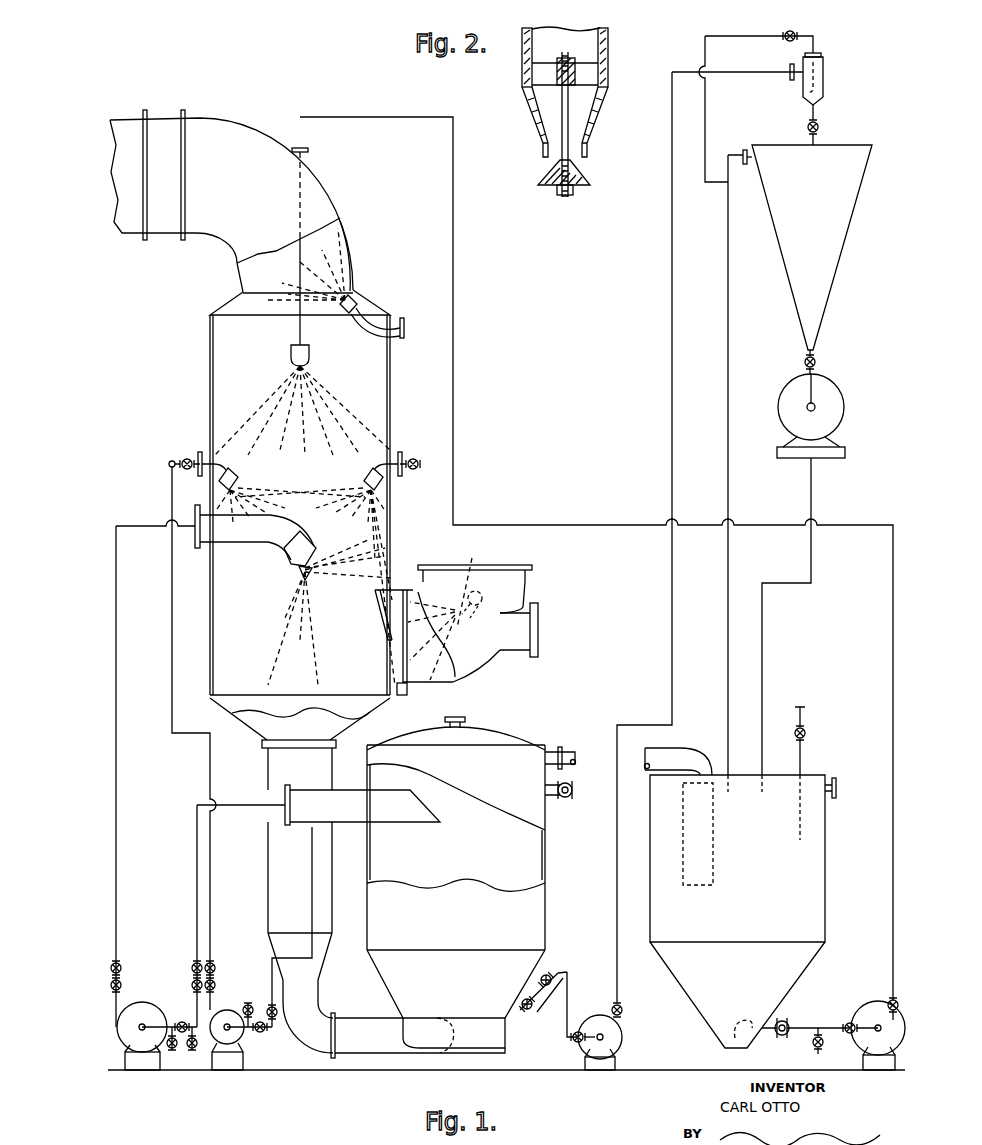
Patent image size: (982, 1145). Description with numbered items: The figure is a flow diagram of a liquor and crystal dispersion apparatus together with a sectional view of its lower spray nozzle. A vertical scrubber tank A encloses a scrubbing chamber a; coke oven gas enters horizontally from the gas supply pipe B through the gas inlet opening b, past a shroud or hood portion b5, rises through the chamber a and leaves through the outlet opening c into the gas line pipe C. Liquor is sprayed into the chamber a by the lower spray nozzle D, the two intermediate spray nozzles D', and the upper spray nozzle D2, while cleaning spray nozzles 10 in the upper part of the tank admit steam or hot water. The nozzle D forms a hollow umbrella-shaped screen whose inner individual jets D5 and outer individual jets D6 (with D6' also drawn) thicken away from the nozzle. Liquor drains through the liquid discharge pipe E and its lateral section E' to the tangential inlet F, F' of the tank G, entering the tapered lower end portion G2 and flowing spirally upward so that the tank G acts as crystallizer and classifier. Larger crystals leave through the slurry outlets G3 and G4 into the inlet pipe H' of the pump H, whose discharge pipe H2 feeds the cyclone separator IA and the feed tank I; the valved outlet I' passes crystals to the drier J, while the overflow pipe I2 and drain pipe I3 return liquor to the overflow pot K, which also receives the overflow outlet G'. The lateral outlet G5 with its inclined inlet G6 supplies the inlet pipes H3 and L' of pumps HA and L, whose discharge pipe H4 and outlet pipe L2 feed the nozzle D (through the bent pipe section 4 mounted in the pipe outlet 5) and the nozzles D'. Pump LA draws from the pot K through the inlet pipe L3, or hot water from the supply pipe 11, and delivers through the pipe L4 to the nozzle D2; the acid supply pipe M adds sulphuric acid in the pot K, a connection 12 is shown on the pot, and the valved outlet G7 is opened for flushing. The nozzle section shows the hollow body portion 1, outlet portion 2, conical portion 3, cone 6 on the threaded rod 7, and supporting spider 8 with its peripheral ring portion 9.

In FIG. 1, the gas line pipe C is at (332, 206).
In FIG. 1, the outlet opening c is at (305, 264).
In FIG. 1, the spray nozzles 10 is at (362, 318).
In FIG. 1, the upper spray nozzle D2 is at (291, 350).
In FIG. 1, the scrubbing chamber a is at (302, 410).
In FIG. 1, the scrubber tank A is at (393, 416).
In FIG. 1, the intermediate spray nozzles D' is at (300, 562).
In FIG. 1, the bent pipe section 4 is at (237, 534).
In FIG. 2, the bent pipe section 4 is at (607, 34).
In FIG. 1, the pipe outlet 5 is at (200, 548).
In FIG. 1, the lower spray nozzle D is at (285, 552).
In FIG. 2, the lower spray nozzle D is at (499, 78).
In FIG. 1, the individual jets D5 is at (307, 588).
In FIG. 1, the individual jets D6 is at (271, 606).
In FIG. 1, the spray jet D6' is at (345, 549).
In FIG. 1, the gas supply pipe B is at (527, 592).
In FIG. 1, the gas inlet opening b is at (398, 652).
In FIG. 1, the shroud or hood portion b5 is at (408, 590).
In FIG. 1, the liquid discharge pipe E is at (280, 864).
In FIG. 1, the lateral section E' is at (317, 1037).
In FIG. 1, the tangential inlet connection F is at (420, 1056).
In FIG. 1, the tangential inlet F' is at (456, 1053).
In FIG. 1, the tank G is at (456, 833).
In FIG. 1, the inclined inlet G6 is at (432, 815).
In FIG. 1, the lateral outlet G5 is at (348, 818).
In FIG. 1, the overflow outlet G' is at (628, 746).
In FIG. 1, the valved outlet G7 is at (555, 806).
In FIG. 1, the tapered lower end portion G2 is at (456, 984).
In FIG. 1, the upper slurry outlet G3 is at (550, 975).
In FIG. 1, the lower slurry outlet G4 is at (525, 1014).
In FIG. 1, the discharge pipe H2 is at (671, 690).
In FIG. 1, the inlet pipe H' is at (569, 1055).
In FIG. 1, the pump H is at (614, 1042).
In FIG. 1, the discharge pipe H4 is at (118, 892).
In FIG. 1, the pump HA is at (150, 1005).
In FIG. 1, the inlet pipe H3 is at (196, 912).
In FIG. 1, the outlet pipe L2 is at (209, 766).
In FIG. 1, the pump L is at (241, 1036).
In FIG. 1, the inlet pipe L' is at (276, 927).
In FIG. 1, the pipe L4 is at (892, 835).
In FIG. 1, the pump LA is at (878, 1003).
In FIG. 1, the inlet pipe L3 is at (836, 1024).
In FIG. 1, the hot water supply pipe 11 is at (812, 1046).
In FIG. 1, the overflow pot K is at (737, 911).
In FIG. 1, the acid supply pipe M is at (803, 762).
In FIG. 1, the overflow connection 12 is at (832, 800).
In FIG. 1, the feed tank I is at (807, 247).
In FIG. 1, the valved outlet I' is at (825, 356).
In FIG. 1, the drier J is at (845, 396).
In FIG. 1, the overflow pipe I2 is at (730, 299).
In FIG. 1, the drain pipe I3 is at (707, 123).
In FIG. 1, the cyclone separator IA is at (825, 82).
In FIG. 2, the hollow body portion 1 is at (609, 48).
In FIG. 2, the outlet portion 2 is at (589, 150).
In FIG. 2, the conical portion 3 is at (523, 112).
In FIG. 2, the cone 6 is at (591, 181).
In FIG. 2, the stem or rod 7 is at (569, 112).
In FIG. 2, the supporting spider 8 is at (558, 66).
In FIG. 2, the peripheral ring portion 9 is at (601, 73).